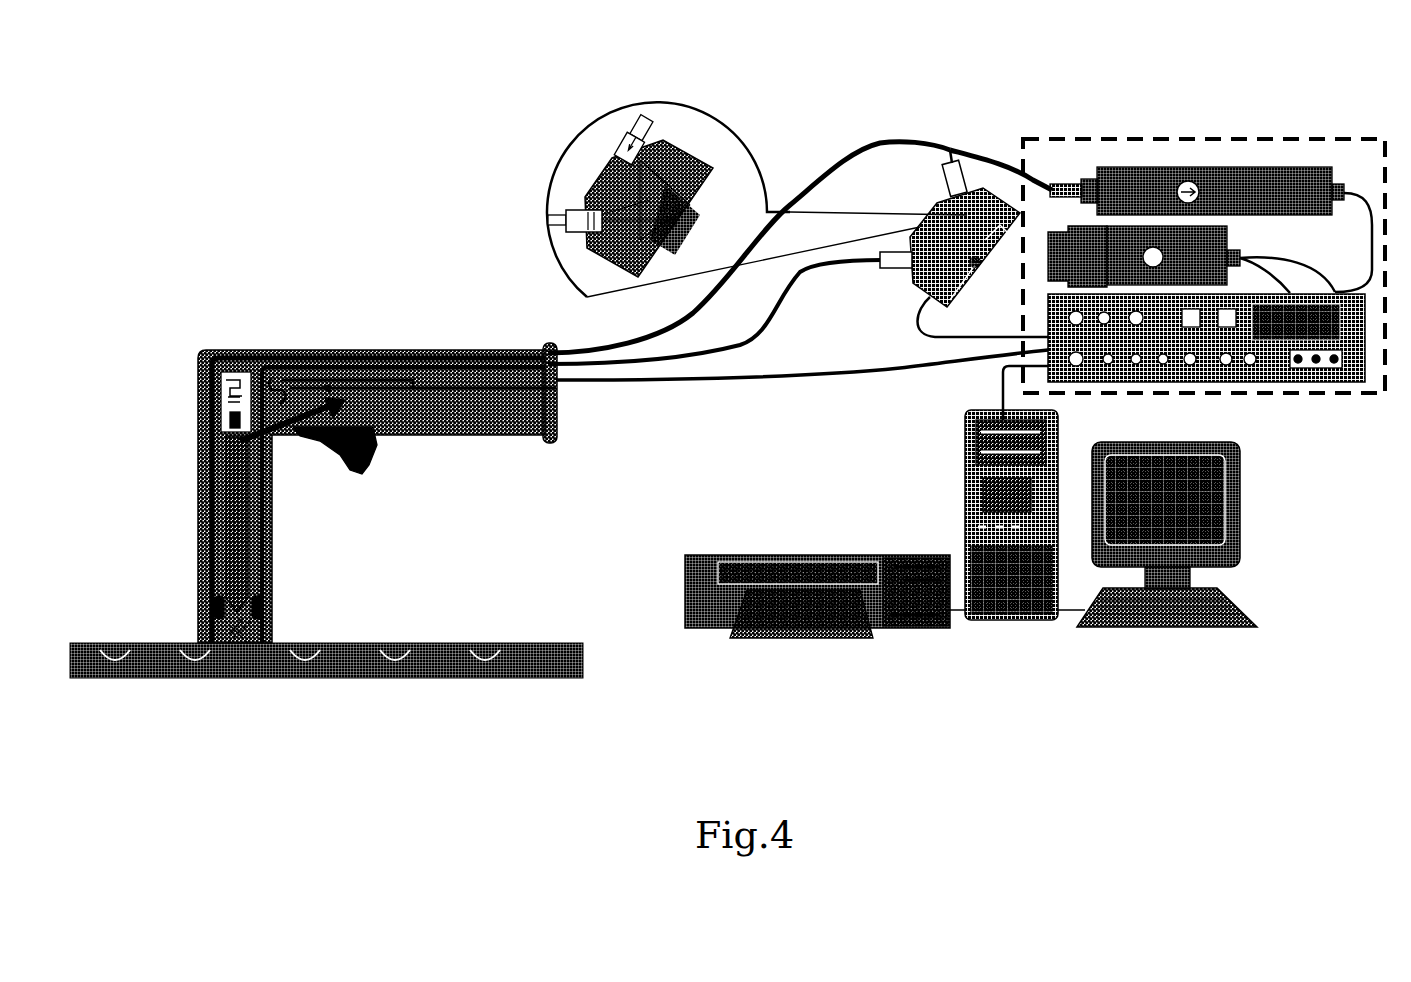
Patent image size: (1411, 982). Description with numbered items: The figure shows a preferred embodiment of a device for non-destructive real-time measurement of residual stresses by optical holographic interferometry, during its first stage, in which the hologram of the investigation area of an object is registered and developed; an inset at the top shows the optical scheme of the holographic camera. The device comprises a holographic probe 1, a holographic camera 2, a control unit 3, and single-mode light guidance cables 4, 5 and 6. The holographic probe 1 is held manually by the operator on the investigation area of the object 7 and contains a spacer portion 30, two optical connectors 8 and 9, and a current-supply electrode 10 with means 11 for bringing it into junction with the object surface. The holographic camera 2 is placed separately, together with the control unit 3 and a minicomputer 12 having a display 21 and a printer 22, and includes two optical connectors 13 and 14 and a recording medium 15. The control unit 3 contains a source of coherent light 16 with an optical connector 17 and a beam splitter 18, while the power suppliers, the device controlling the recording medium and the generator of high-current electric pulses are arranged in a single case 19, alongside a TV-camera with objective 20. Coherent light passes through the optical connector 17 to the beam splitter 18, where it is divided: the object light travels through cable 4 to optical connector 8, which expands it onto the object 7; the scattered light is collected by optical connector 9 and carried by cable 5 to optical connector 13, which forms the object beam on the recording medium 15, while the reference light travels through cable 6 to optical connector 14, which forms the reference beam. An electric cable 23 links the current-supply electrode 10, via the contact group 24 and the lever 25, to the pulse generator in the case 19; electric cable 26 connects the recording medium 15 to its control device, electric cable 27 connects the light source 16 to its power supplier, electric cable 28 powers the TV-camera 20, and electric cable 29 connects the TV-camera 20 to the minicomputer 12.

The holographic probe 1 is at (210, 350).
The holographic camera 2 is at (695, 158).
The control unit 3 is at (1197, 136).
The single-mode light guidance cable 4 is at (622, 348).
The single-mode light guidance cable 5 is at (672, 370).
The single-mode light guidance cable 6 is at (987, 157).
The object 7 is at (530, 641).
The optical connector 8 is at (210, 607).
The optical connector 9 is at (266, 608).
The current-supply electrode 10 is at (246, 545).
The means for putting the electrode into junction 11 is at (276, 432).
The minicomputer 12 is at (993, 615).
The optical connector 13 is at (576, 227).
The optical connector 14 is at (628, 150).
The recording medium 15 is at (674, 222).
The source of coherent light 16 is at (1288, 167).
The optical connector 17 is at (1092, 184).
The beam splitter 18 is at (1060, 186).
The single case of the control unit 19 is at (1316, 376).
The TV-camera with objective 20 is at (1200, 238).
The display 21 is at (1212, 471).
The printer 22 is at (822, 630).
The electric cable 23 is at (797, 372).
The contact group 24 is at (300, 392).
The lever 25 is at (376, 452).
The electric cable 26 is at (960, 338).
The electric cable 27 is at (1352, 192).
The electric cable 28 is at (1310, 262).
The electric cable 29 is at (1001, 392).
The spacer portion 30 is at (273, 642).